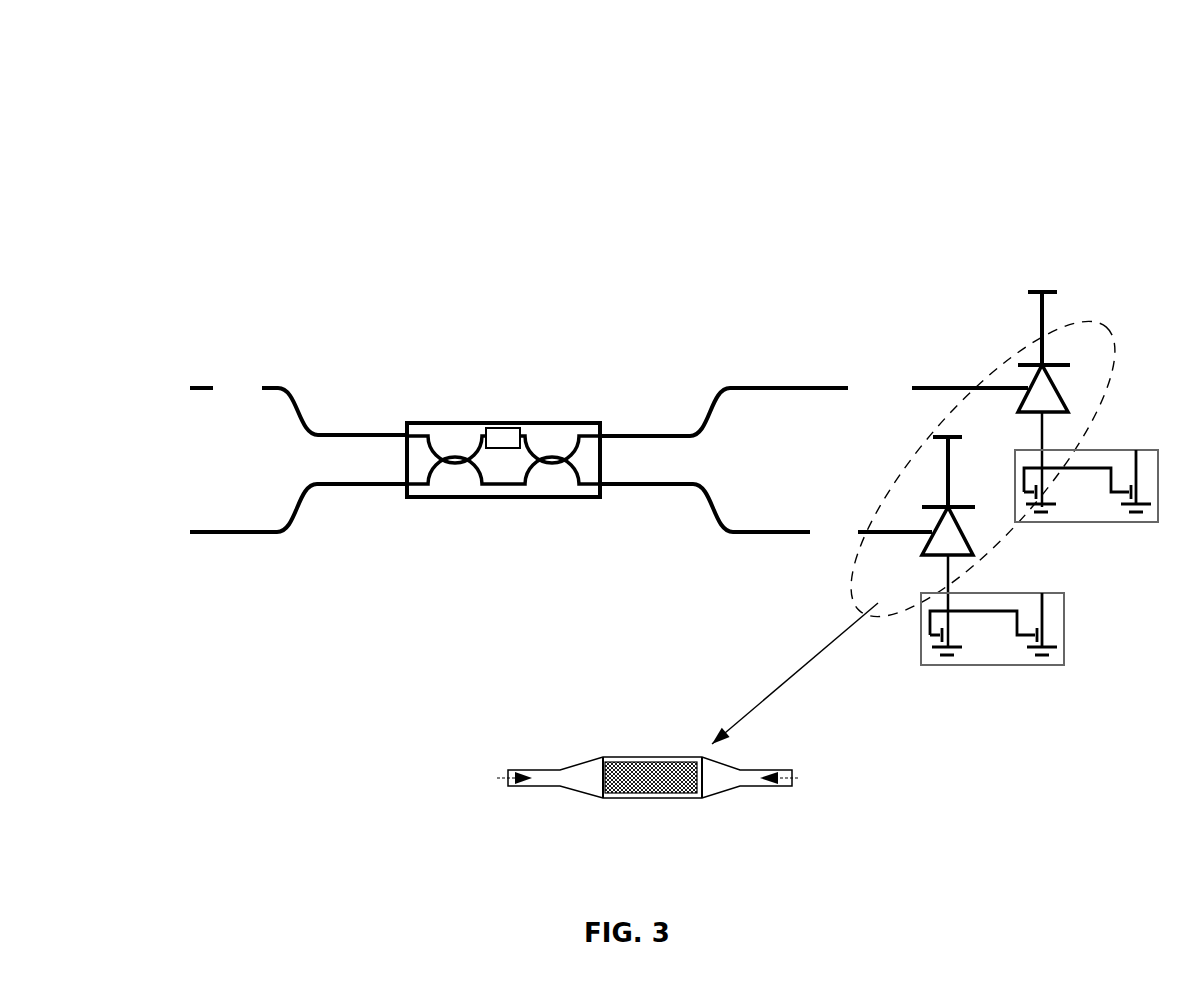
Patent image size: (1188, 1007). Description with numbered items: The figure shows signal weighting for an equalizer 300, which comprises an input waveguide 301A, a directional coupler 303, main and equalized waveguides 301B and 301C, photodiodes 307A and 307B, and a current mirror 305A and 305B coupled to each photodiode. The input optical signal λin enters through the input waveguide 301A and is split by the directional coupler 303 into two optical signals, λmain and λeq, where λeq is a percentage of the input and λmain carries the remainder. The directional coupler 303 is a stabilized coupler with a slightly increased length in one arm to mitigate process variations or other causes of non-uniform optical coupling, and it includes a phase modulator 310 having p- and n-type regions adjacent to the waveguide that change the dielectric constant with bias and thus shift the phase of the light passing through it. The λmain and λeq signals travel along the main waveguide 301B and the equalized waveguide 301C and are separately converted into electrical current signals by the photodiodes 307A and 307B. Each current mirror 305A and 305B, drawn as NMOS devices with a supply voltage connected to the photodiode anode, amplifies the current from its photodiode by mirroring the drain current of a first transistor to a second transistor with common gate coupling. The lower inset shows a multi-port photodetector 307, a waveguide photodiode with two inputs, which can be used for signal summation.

The equalizer 300 is at (145, 105).
The input waveguide 301A is at (208, 391).
The main waveguide 301B is at (776, 393).
The equalized waveguide 301C is at (757, 536).
The directional coupler 303 is at (582, 423).
The phase modulator 310 is at (498, 428).
The multi-port photodetector 307 is at (646, 757).
The photodiode 307A is at (1066, 402).
The photodiode 307B is at (920, 562).
The current mirror 305A is at (1155, 524).
The current mirror 305B is at (922, 667).